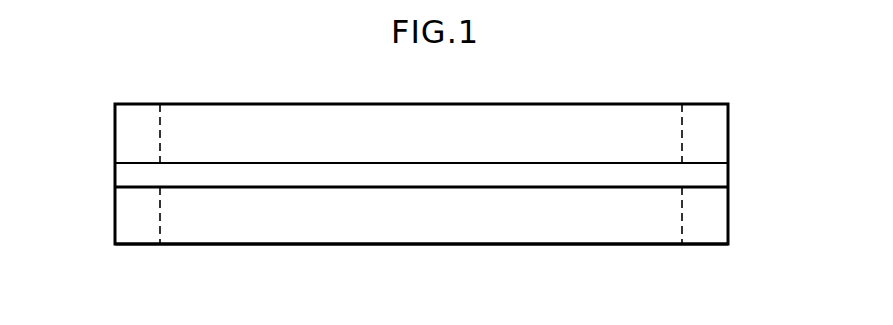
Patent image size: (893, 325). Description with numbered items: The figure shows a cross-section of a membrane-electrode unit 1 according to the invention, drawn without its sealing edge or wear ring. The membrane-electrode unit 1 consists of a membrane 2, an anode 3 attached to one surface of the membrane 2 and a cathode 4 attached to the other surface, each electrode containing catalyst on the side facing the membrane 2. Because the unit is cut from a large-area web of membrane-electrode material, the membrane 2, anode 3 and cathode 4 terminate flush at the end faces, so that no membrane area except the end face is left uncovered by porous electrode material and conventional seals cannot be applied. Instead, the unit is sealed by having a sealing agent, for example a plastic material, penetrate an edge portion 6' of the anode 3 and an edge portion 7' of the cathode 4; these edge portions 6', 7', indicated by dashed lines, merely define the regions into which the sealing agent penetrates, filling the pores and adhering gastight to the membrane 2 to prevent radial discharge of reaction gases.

The membrane-electrode unit 1 is at (637, 94).
The membrane 2 is at (710, 177).
The anode 3 is at (522, 223).
The cathode 4 is at (501, 123).
The edge portion of anode 6' is at (421, 215).
The edge portion of cathode 7' is at (421, 133).